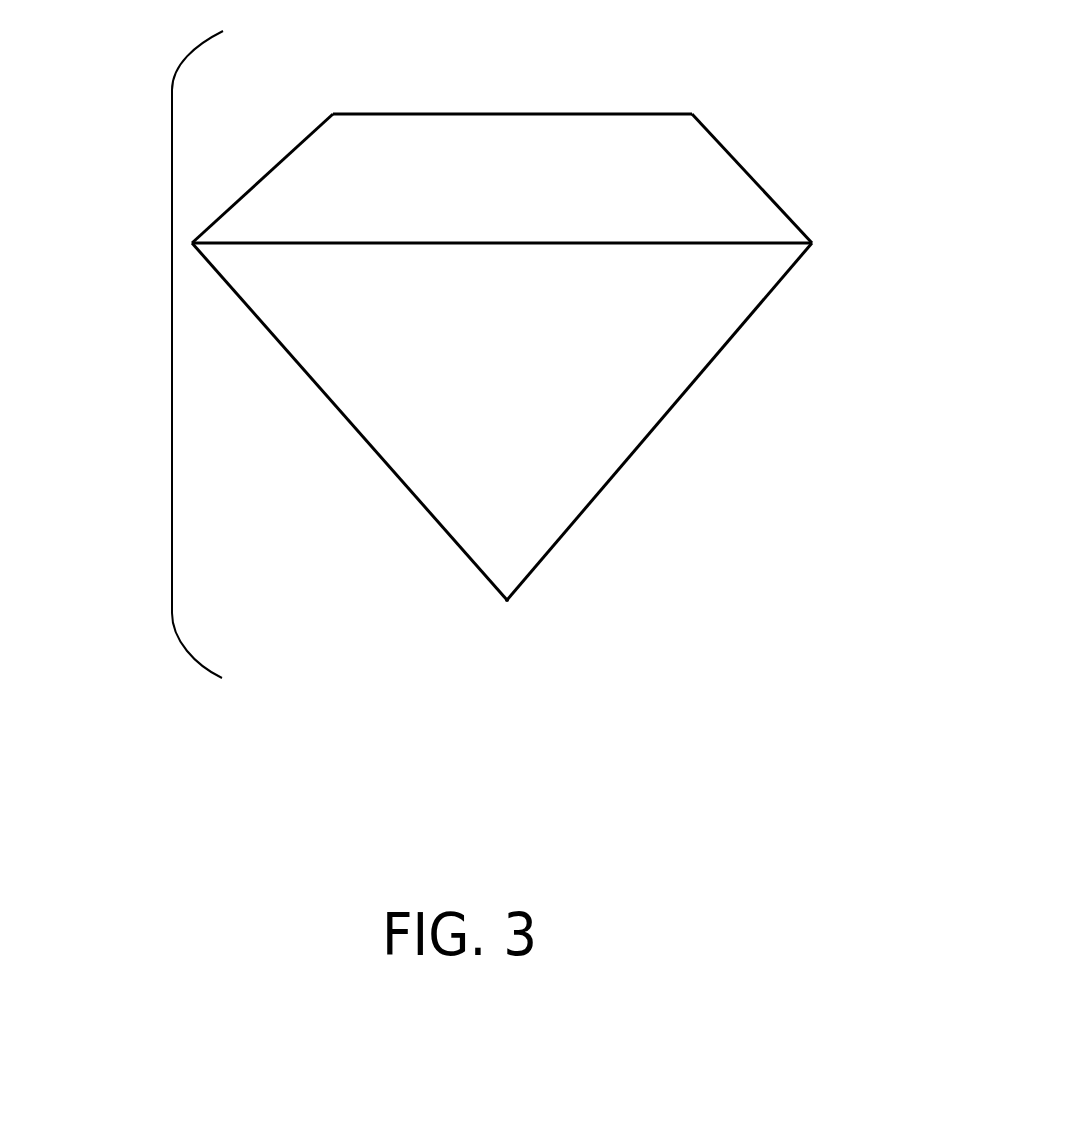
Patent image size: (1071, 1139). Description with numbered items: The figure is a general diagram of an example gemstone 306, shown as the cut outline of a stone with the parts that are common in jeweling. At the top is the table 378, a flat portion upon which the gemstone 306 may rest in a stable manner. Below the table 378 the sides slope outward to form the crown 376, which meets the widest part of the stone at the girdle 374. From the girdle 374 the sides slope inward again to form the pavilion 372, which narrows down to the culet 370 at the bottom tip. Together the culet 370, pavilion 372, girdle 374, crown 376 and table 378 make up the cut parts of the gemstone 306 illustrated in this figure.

The gemstone 306 is at (172, 353).
The culet 370 is at (507, 600).
The pavilion 372 is at (680, 400).
The girdle 374 is at (812, 243).
The crown 376 is at (747, 170).
The table 378 is at (613, 114).